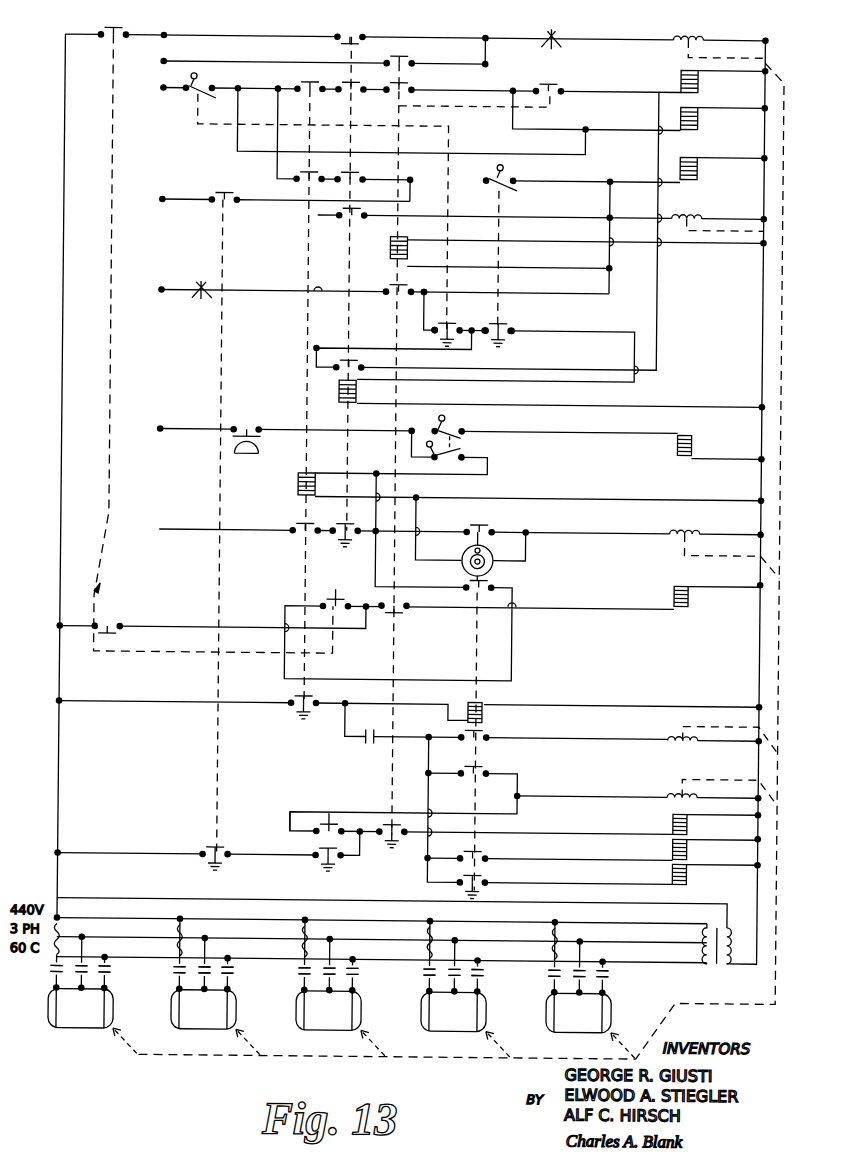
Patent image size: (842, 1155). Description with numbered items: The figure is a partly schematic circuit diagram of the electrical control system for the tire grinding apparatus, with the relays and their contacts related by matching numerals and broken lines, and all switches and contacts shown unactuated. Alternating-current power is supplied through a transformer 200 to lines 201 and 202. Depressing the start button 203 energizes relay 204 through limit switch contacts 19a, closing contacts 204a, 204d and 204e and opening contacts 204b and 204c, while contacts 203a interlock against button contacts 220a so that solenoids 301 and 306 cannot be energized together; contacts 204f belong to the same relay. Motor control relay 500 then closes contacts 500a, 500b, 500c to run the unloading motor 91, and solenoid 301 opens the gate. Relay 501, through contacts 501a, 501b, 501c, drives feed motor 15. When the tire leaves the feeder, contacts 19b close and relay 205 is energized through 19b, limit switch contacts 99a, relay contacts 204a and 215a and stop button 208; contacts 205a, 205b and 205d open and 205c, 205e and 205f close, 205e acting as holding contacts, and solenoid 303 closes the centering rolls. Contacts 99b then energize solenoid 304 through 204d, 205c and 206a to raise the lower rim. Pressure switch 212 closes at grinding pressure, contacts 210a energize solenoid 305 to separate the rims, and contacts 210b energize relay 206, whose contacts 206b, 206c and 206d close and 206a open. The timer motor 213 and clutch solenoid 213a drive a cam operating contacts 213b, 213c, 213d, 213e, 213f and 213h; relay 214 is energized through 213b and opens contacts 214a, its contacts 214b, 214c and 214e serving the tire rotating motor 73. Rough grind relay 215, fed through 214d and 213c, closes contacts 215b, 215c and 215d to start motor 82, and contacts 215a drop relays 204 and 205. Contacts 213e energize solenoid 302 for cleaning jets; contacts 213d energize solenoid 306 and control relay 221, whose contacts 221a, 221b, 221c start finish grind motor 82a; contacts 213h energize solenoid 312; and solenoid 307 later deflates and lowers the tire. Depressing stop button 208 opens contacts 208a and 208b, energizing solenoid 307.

The feed motor 15 is at (436, 1031).
The limit switch contacts 19a is at (497, 169).
The limit switch contacts 19b is at (496, 322).
The tire rotating motor 73 is at (311, 1031).
The rough grind motor 82 is at (186, 1031).
The finish grind motor 82a is at (63, 1031).
The unloading motor 91 is at (561, 1031).
The limit switch contacts 99a is at (446, 322).
The limit switch contacts 99b is at (195, 91).
The transformer 200 is at (731, 961).
The line 201 is at (61, 421).
The line 202 is at (761, 340).
The start button 203 is at (230, 194).
The start button contacts 203a is at (224, 855).
The relay 204 is at (403, 240).
The relay contacts 204a is at (421, 281).
The relay contacts 204b is at (401, 617).
The relay contacts 204c is at (403, 850).
The relay contacts 204d is at (408, 86).
The relay contacts 204e is at (408, 62).
The relay contacts 204f is at (547, 88).
The relay 205 is at (356, 403).
The relay contacts 205a is at (356, 542).
The relay contacts 205b is at (344, 180).
The relay contacts 205c is at (342, 80).
The relay contacts 205d is at (349, 36).
The relay contacts 205e is at (347, 220).
The relay contacts 205f is at (346, 361).
The relay 206 is at (310, 474).
The relay contacts 206a is at (305, 89).
The relay contacts 206b is at (284, 176).
The relay contacts 206c is at (292, 524).
The relay contacts 206d is at (318, 698).
The stop button 208 is at (117, 34).
The stop button contacts 208a is at (118, 628).
The stop button contacts 208b is at (324, 606).
The limit switch contacts 210a is at (449, 417).
The relay contacts 210b is at (459, 448).
The pressure switch 212 is at (249, 430).
The timer motor 213 is at (493, 568).
The timer clutch solenoid 213a is at (493, 702).
The timer contacts 213b is at (474, 522).
The timer contacts 213c is at (485, 731).
The timer contacts 213d is at (482, 768).
The timer contacts 213e is at (485, 854).
The timer contacts 213f is at (455, 580).
The timer contacts 213h is at (486, 883).
The relay 214 is at (694, 532).
The relay contacts 214a is at (546, 29).
The relay contacts 214b is at (342, 968).
The relay contacts 214c is at (365, 972).
The contacts 214d is at (381, 732).
The relay contacts 214e is at (304, 976).
The rough grind relay 215 is at (688, 743).
The relay contacts 215a is at (200, 282).
The relay contacts 215b is at (214, 969).
The relay contacts 215c is at (240, 972).
The relay contacts 215d is at (179, 977).
The button contacts 220a is at (333, 816).
The control relay 221 is at (694, 798).
The relay contacts 221a is at (56, 972).
The relay contacts 221b is at (89, 970).
The relay contacts 221c is at (117, 972).
The solenoid 301 is at (694, 170).
The solenoid 302 is at (694, 845).
The solenoid 303 is at (694, 80).
The solenoid 304 is at (694, 117).
The solenoid 305 is at (692, 435).
The solenoid 306 is at (694, 820).
The solenoid 307 is at (692, 603).
The solenoid 312 is at (694, 872).
The motor control relay 500 is at (697, 226).
The relay contacts 500a is at (556, 977).
The relay contacts 500b is at (592, 965).
The relay contacts 500c is at (615, 970).
The relay 501 is at (686, 36).
The relay contacts 501a is at (429, 975).
The relay contacts 501b is at (463, 967).
The relay contacts 501c is at (490, 972).